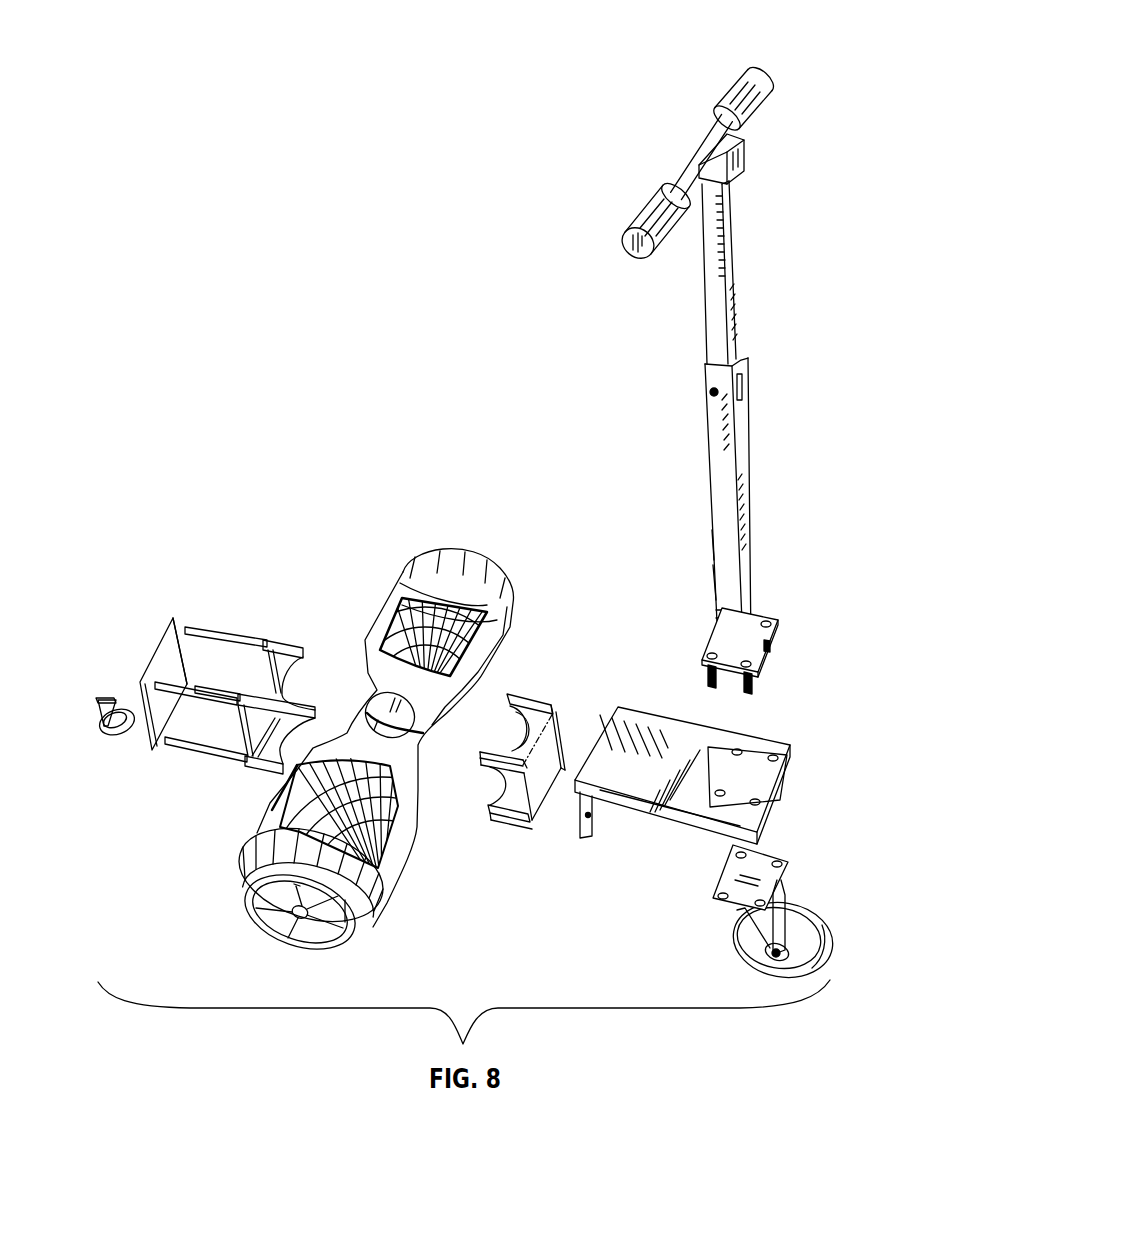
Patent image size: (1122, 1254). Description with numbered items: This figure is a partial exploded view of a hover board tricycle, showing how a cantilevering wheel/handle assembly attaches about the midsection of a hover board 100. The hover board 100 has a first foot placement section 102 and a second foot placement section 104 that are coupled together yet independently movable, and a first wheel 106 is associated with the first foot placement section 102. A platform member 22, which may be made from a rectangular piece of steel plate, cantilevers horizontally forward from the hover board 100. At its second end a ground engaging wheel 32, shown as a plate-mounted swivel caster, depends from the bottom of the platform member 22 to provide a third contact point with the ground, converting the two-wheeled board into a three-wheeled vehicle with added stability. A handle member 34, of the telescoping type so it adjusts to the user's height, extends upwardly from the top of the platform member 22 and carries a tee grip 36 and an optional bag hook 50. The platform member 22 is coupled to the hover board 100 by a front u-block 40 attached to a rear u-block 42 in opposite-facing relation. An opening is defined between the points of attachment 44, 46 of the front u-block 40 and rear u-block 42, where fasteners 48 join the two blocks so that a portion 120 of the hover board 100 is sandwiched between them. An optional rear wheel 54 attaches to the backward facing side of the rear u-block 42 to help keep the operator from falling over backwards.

The platform member 22 is at (620, 706).
The ground engaging wheel 32 is at (805, 912).
The handle member 34 is at (750, 536).
The tee grip 36 is at (771, 87).
The front u-block 40 is at (532, 694).
The rear u-block 42 is at (288, 640).
The point of attachment 44 is at (513, 822).
The point of attachment 46 is at (265, 772).
The fasteners 48 is at (222, 640).
The bag hook 50 is at (748, 150).
The rear wheel 54 is at (106, 698).
The hover board 100 is at (379, 722).
The first foot placement section 102 is at (390, 842).
The second foot placement section 104 is at (463, 614).
The first wheel 106 is at (300, 944).
The portion of the hover board 120 is at (435, 745).